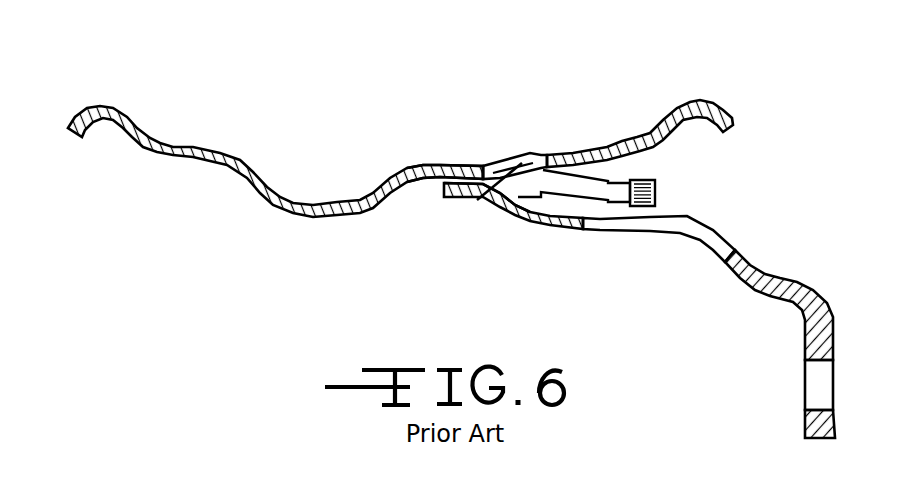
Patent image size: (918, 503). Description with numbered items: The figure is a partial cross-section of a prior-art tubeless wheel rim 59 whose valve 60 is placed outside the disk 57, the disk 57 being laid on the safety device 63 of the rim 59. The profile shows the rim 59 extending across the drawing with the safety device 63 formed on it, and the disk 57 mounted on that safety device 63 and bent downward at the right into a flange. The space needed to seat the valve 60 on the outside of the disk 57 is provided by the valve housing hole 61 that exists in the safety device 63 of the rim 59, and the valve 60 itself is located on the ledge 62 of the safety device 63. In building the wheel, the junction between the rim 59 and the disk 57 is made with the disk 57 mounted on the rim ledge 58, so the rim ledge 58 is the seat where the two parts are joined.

The disk 57 is at (806, 333).
The rim ledge 58 is at (450, 164).
The tubeless wheel rim 59 is at (320, 148).
The valve 60 is at (578, 192).
The valve housing hole 61 is at (503, 160).
The ledge 62 is at (540, 167).
The safety device 63 is at (540, 157).